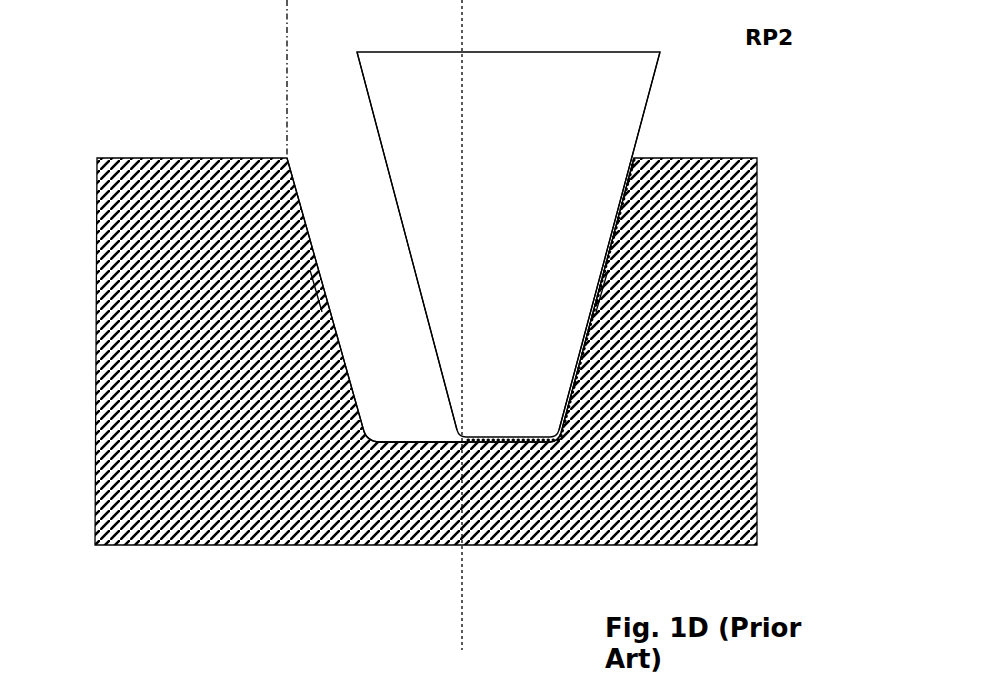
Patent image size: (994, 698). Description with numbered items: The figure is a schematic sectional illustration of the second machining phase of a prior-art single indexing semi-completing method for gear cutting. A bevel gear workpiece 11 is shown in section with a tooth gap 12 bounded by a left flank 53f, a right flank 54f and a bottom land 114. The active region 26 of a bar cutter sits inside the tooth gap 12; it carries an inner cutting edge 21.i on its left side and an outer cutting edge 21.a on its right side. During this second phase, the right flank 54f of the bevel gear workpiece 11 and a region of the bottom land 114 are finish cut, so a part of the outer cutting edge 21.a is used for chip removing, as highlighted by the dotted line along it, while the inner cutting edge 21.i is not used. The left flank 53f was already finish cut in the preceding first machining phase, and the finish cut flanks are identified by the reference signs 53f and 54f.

The bevel gear workpiece 11 is at (110, 480).
The tooth gap 12 is at (316, 160).
The active region of a bar cutter 26 is at (508, 246).
The inner cutting edge 21.i is at (363, 80).
The outer cutting edge 21.a is at (652, 83).
The bottom land 114 is at (421, 440).
The left flank 53f is at (317, 295).
The right flank 54f is at (600, 303).